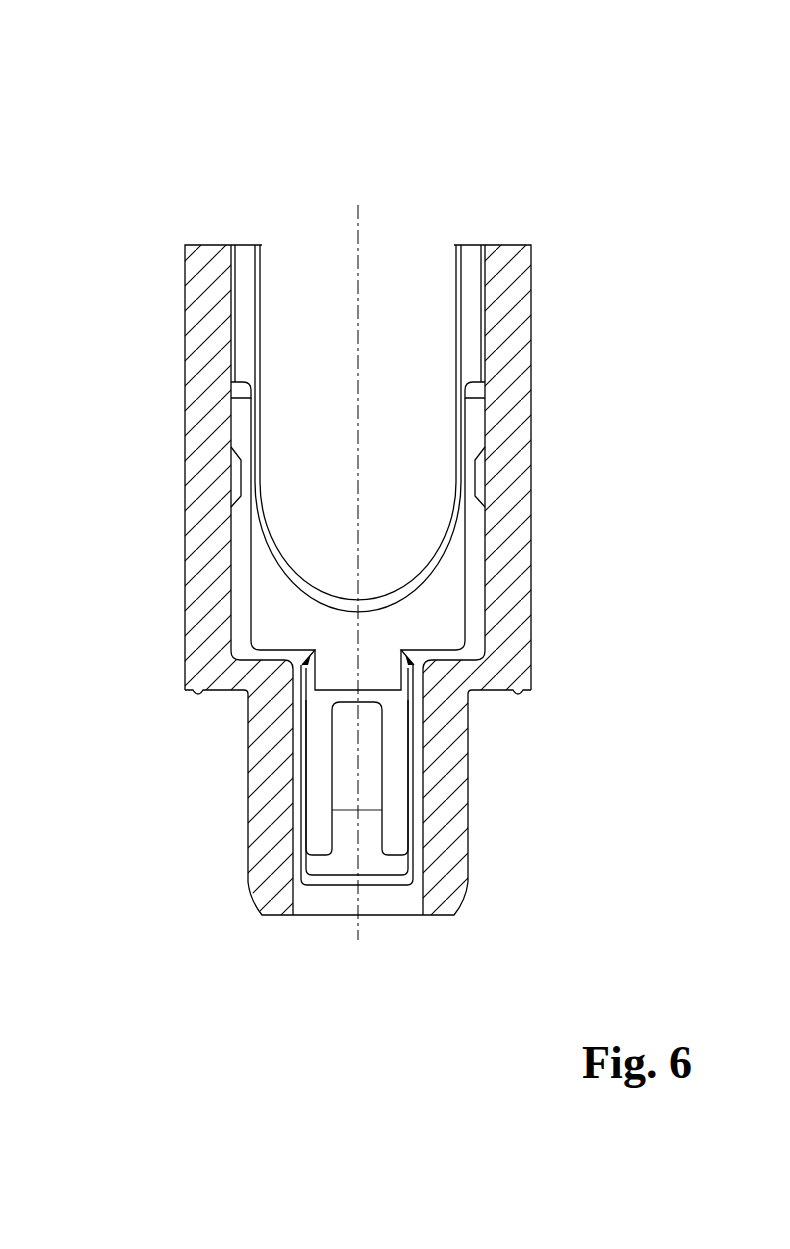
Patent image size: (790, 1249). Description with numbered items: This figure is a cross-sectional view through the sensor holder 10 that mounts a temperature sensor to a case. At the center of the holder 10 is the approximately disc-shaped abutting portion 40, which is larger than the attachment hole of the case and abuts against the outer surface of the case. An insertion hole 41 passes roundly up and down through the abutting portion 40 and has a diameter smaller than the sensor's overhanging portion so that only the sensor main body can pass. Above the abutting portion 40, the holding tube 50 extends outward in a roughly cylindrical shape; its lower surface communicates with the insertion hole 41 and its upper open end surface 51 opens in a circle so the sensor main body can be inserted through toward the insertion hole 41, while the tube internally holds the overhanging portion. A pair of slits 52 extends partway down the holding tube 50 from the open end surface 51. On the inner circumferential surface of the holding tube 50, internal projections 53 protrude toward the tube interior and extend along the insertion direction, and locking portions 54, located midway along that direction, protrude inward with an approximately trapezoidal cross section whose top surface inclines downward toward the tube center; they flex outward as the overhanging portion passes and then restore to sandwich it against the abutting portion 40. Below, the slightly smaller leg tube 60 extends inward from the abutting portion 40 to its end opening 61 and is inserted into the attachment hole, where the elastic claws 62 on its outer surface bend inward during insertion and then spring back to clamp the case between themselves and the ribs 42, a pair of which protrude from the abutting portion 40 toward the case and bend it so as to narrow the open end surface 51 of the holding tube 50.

The container assembly 10 is at (227, 88).
The abutting portion 40 is at (513, 666).
The insertion hole 41 is at (290, 740).
The ribs 42 is at (525, 700).
The holding tube 50 is at (520, 292).
The open end surface 51 is at (397, 268).
The slits 52 is at (296, 338).
The internal projections 53 is at (238, 418).
The locking portions 54 is at (235, 478).
The leg tube 60 is at (458, 827).
The end opening 61 is at (381, 905).
The elastic claws 62 is at (345, 790).